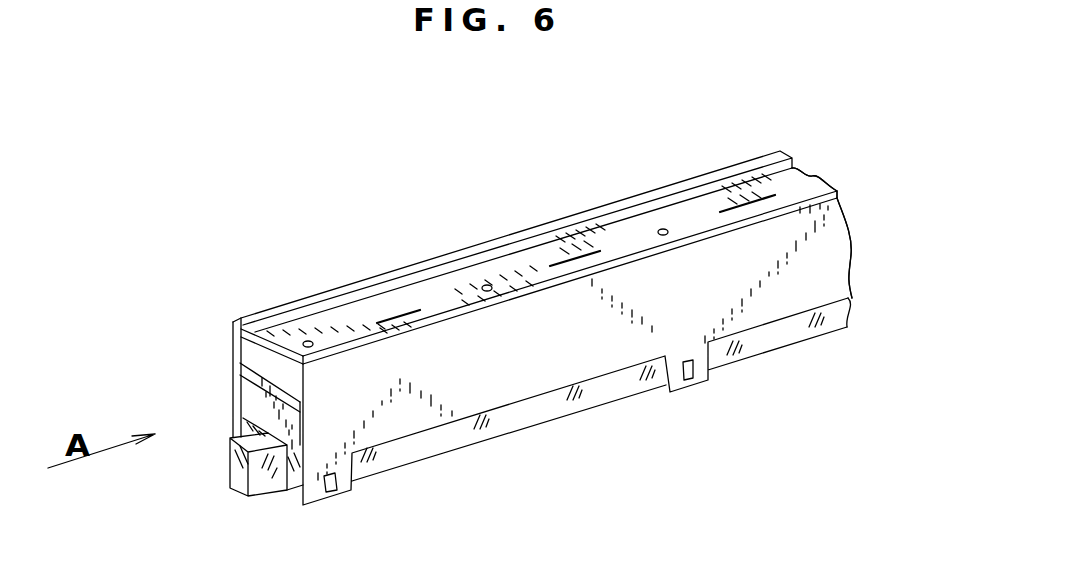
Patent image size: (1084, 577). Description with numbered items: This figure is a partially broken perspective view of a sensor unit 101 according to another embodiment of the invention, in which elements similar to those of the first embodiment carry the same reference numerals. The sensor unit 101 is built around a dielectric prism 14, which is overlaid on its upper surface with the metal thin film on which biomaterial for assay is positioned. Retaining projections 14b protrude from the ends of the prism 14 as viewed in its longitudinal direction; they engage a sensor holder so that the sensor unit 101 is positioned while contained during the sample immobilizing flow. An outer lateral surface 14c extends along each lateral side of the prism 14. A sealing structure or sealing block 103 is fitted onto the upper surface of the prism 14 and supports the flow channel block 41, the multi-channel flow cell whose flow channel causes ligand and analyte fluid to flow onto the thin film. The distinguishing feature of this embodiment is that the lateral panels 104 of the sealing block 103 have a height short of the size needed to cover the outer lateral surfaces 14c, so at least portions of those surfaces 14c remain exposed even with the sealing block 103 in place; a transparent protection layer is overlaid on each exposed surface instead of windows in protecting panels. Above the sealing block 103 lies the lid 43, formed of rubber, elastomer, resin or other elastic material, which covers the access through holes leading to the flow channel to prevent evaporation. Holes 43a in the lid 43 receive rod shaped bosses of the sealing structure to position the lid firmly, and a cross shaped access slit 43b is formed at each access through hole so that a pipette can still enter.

The sensor unit 101 is at (441, 162).
The lid 43 is at (267, 336).
The holes 43a is at (397, 318).
The cross shaped access slit 43b is at (309, 339).
The flow channel block 41 is at (254, 398).
The prism 14 is at (285, 488).
The retaining projections 14b is at (229, 482).
The outer lateral surface 14c is at (782, 338).
The sealing block 103 is at (846, 206).
The lateral panels 104 is at (834, 283).